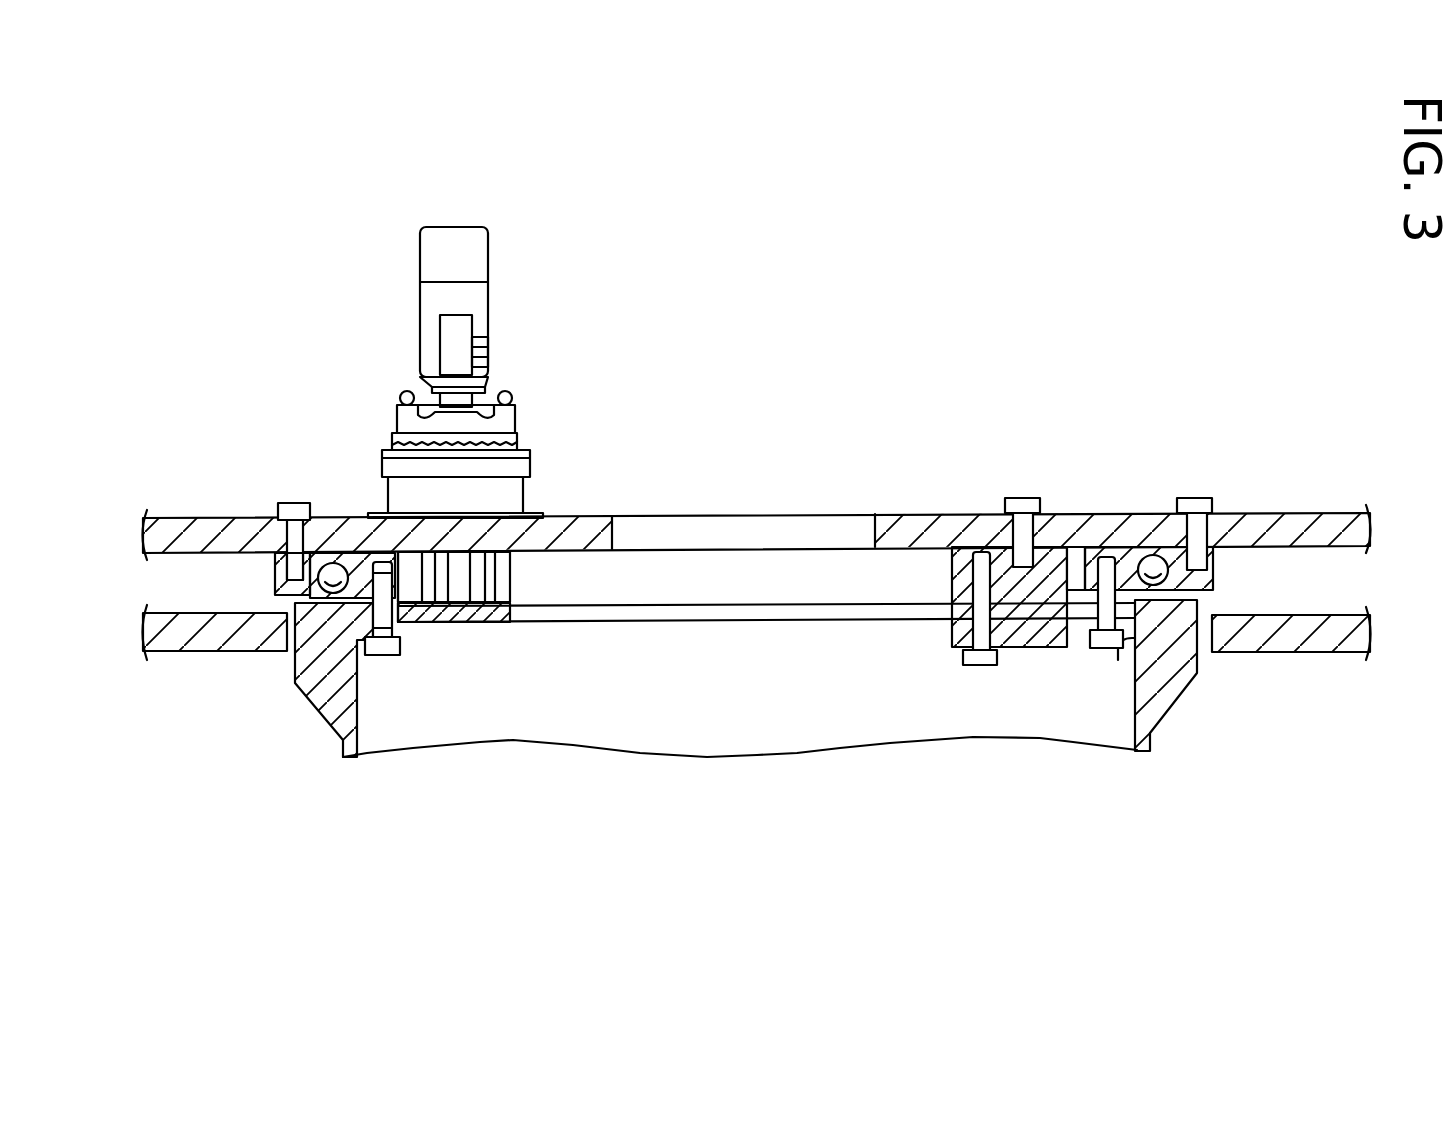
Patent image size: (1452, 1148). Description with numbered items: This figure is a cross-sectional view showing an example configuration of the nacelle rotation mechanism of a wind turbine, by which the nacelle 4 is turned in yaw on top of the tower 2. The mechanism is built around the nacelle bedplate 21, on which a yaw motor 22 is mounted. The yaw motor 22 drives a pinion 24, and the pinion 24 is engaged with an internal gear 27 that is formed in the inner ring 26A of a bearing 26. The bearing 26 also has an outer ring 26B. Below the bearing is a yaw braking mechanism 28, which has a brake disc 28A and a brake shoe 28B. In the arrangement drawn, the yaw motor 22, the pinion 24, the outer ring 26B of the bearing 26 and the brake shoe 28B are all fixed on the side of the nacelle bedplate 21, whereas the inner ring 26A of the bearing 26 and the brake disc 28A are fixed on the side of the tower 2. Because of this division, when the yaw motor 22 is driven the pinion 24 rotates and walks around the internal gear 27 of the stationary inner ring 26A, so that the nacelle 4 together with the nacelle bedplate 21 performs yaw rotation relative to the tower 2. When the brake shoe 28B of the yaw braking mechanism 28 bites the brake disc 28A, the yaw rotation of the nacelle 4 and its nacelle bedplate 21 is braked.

The tower 2 is at (1180, 707).
The nacelle 4 is at (190, 657).
The nacelle bedplate 21 is at (207, 537).
The yaw motor 22 is at (477, 307).
The pinion 24 is at (457, 590).
The bearing 26 is at (362, 815).
The inner ring 26A is at (343, 608).
The outer ring 26B is at (273, 575).
The internal gear 27 is at (407, 587).
The yaw braking mechanism 28 is at (882, 660).
The brake disc 28A is at (1077, 610).
The brake shoe 28B is at (1018, 637).